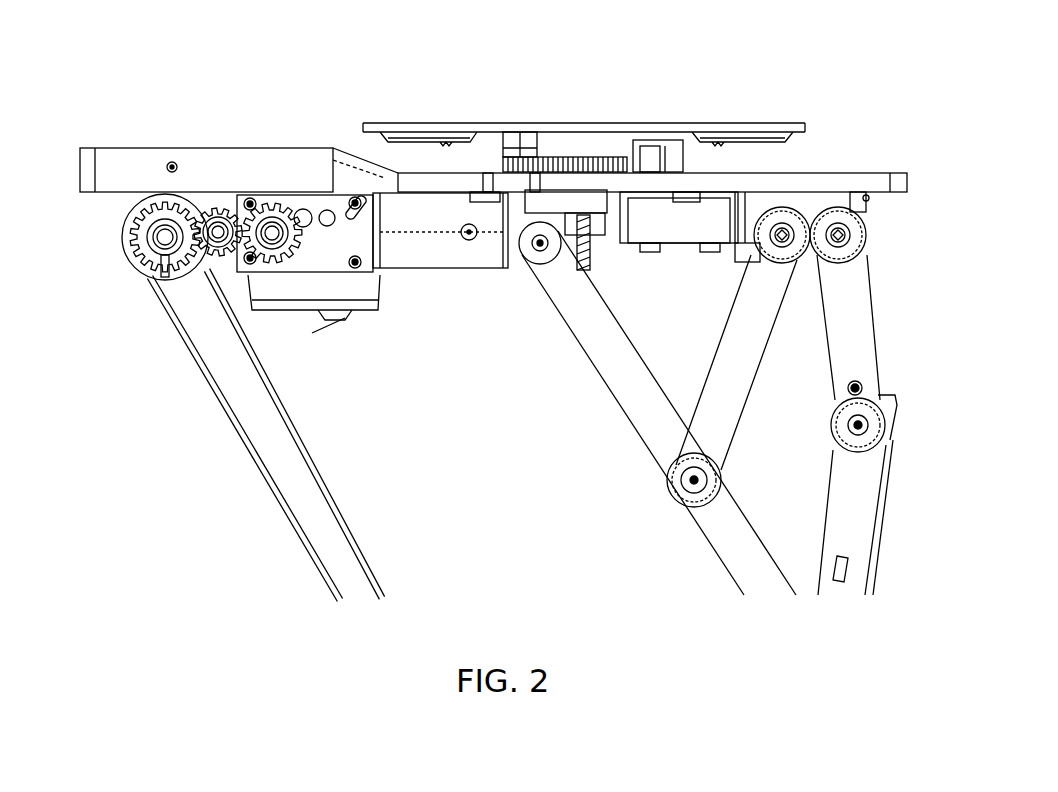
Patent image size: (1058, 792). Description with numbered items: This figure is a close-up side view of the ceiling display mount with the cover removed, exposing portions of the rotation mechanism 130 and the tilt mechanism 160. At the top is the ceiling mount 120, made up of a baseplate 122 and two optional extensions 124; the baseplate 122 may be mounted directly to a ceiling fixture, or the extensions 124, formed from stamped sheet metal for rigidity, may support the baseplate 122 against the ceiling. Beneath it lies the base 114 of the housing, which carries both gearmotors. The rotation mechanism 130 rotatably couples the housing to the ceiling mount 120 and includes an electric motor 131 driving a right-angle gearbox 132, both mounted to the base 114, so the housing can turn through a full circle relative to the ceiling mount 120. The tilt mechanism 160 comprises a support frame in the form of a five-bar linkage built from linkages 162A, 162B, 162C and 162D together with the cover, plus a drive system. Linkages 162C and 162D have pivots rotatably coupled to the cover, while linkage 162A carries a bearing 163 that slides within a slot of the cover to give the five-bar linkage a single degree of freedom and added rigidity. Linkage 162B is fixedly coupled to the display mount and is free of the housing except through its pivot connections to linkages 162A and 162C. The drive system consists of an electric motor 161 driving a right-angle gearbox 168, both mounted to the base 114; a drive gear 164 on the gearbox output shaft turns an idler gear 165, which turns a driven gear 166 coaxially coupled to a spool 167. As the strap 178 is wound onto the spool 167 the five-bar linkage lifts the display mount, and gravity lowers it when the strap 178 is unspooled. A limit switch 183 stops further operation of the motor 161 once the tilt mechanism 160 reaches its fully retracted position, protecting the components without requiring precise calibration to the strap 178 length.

The base 114 is at (140, 158).
The ceiling mount 120 is at (503, 133).
The baseplate 122 is at (626, 130).
The extensions 124 is at (430, 140).
The rotation mechanism 130 is at (722, 163).
The electric motor 131 is at (845, 196).
The right-angle gearbox 132 is at (690, 227).
The tilt mechanism 160 is at (180, 585).
The electric motor 161 is at (440, 230).
The linkage 162A is at (615, 393).
The linkage 162B is at (858, 503).
The linkage 162C is at (860, 355).
The linkage 162D is at (748, 355).
The bearing 163 is at (530, 262).
The drive gear 164 is at (285, 207).
The idler gear 165 is at (213, 207).
The driven gear 166 is at (160, 262).
The spool 167 is at (130, 235).
The right-angle gearbox 168 is at (305, 233).
The strap 178 is at (300, 538).
The limit switch 183 is at (345, 318).